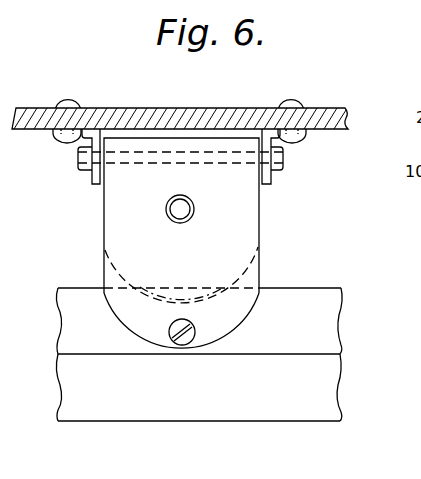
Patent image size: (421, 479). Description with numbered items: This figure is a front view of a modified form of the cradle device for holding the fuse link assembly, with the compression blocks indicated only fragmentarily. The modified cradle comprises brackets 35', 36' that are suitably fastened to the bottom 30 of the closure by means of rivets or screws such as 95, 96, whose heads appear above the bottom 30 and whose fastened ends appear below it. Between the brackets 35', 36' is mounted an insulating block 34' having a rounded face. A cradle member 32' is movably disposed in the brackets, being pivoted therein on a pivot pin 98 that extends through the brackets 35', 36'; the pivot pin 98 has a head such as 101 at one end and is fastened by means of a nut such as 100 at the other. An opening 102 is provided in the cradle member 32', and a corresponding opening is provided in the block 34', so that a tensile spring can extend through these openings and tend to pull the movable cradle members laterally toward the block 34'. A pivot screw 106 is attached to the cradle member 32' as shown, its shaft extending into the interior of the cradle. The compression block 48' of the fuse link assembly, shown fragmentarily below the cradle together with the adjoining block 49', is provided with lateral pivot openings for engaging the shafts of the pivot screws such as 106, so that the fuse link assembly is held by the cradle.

The bottom of the closure 30 is at (152, 113).
The rivet or screw 95 is at (68, 102).
The rivet or screw 96 is at (294, 106).
The bracket 35' is at (75, 174).
The bracket 36' is at (291, 174).
The nut 100 is at (84, 172).
The head of pivot pin 101 is at (278, 172).
The pivot pin 98 is at (199, 160).
The cradle member 32' is at (212, 243).
The insulating block 34' is at (209, 275).
The opening 102 is at (183, 224).
The pivot screw 106 is at (196, 334).
The compression block 48' is at (225, 321).
The lower block 49' is at (220, 387).